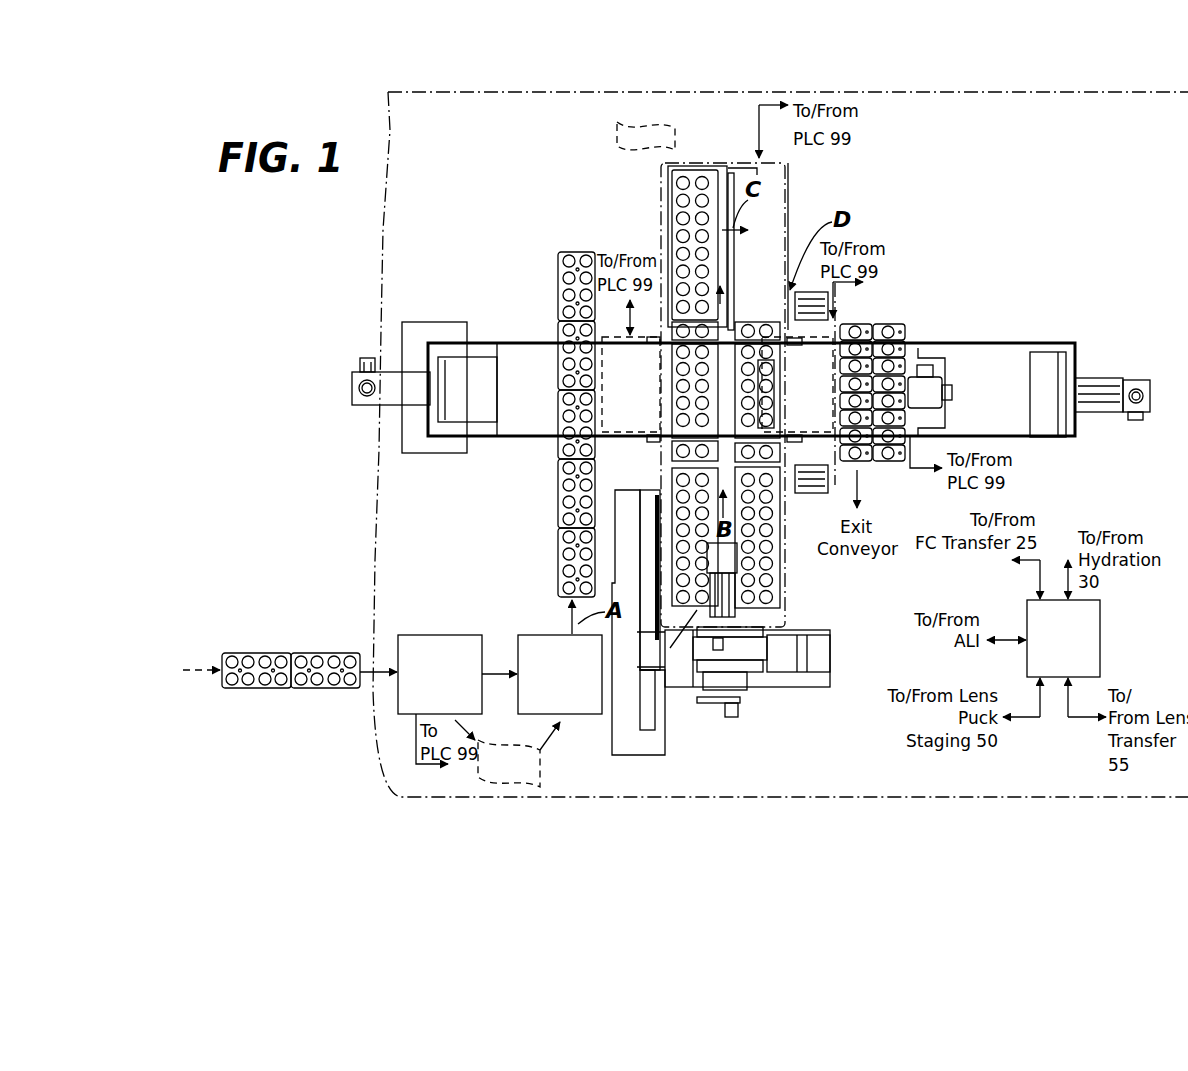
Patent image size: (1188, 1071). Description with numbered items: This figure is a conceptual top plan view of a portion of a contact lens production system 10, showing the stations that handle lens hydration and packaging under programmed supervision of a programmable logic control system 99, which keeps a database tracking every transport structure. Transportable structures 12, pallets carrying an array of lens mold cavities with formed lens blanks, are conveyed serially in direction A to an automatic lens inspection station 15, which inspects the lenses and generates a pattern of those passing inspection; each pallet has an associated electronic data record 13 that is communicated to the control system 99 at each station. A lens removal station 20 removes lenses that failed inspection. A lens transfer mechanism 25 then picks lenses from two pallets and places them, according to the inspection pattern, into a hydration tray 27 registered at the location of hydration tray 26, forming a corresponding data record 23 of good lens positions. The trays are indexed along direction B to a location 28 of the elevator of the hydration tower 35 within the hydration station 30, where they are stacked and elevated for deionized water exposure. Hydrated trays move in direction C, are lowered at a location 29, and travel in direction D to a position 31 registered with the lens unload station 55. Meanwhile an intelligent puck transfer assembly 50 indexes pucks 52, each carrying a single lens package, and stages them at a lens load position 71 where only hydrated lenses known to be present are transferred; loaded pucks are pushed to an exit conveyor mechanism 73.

The contact lens production system 10 is at (598, 90).
The transportable structures 12 is at (558, 283).
The electronic data record 13 is at (540, 773).
The automatic lens inspection station 15 is at (440, 634).
The lens removal station 20 is at (540, 634).
The data record 23 is at (688, 138).
The lens transfer mechanism 25 is at (641, 400).
The hydration tray 26 is at (668, 450).
The hydration tray 27 is at (670, 208).
The location 28 is at (672, 250).
The location 29 is at (777, 230).
The hydration station 30 is at (789, 158).
The position 31 is at (773, 455).
The hydration tower 35 is at (790, 205).
The intelligent puck transfer assembly 50 is at (919, 350).
The pucks 52 is at (862, 320).
The lens unload station 55 is at (824, 400).
The lens load position 71 is at (891, 322).
The exit conveyor mechanism 73 is at (857, 464).
The programmable logic control system 99 is at (1100, 640).